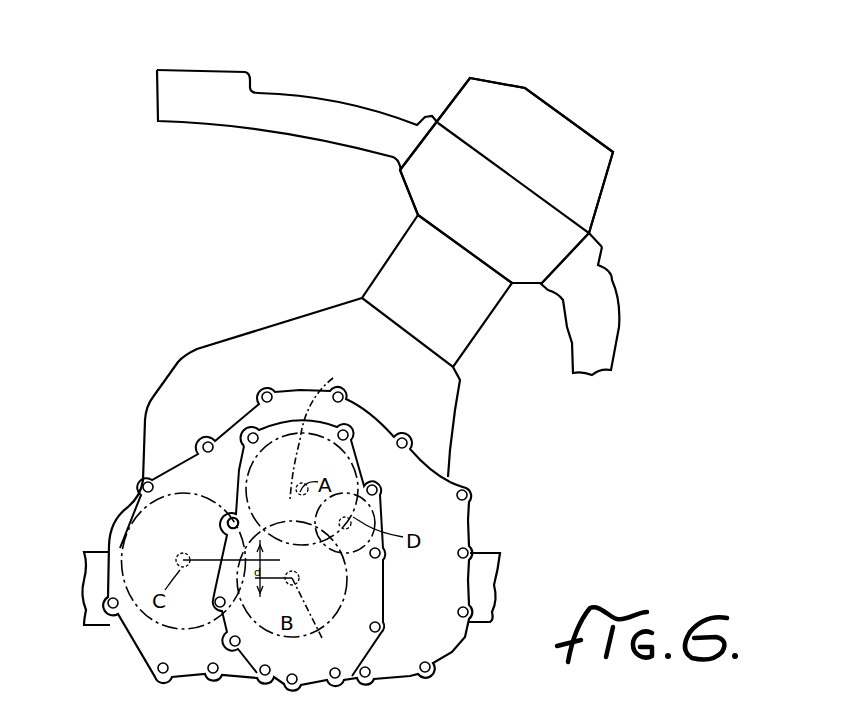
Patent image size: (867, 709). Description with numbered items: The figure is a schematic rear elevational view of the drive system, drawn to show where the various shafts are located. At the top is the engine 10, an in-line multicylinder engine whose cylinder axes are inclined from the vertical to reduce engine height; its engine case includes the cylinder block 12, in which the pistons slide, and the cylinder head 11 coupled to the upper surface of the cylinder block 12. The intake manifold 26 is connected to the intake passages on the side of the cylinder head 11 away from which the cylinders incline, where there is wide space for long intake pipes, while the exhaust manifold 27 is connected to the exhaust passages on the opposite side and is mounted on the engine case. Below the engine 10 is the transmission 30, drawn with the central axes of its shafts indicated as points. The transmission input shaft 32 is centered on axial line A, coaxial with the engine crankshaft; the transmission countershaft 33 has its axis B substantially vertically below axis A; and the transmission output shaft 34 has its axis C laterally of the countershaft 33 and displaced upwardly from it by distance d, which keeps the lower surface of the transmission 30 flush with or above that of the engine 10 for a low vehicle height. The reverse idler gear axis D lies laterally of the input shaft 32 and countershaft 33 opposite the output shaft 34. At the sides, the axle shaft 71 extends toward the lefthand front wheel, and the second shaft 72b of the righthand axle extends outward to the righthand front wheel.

The engine 10 is at (463, 70).
The cylinder head 11 is at (420, 183).
The cylinder block 12 is at (462, 336).
The intake manifold 26 is at (322, 92).
The exhaust manifold 27 is at (605, 300).
The transmission 30 is at (172, 458).
The transmission input shaft 32 is at (303, 452).
The transmission countershaft 33 is at (292, 595).
The transmission output shaft 34 is at (228, 523).
The axle shaft 71 is at (95, 560).
The second shaft 72b is at (485, 560).